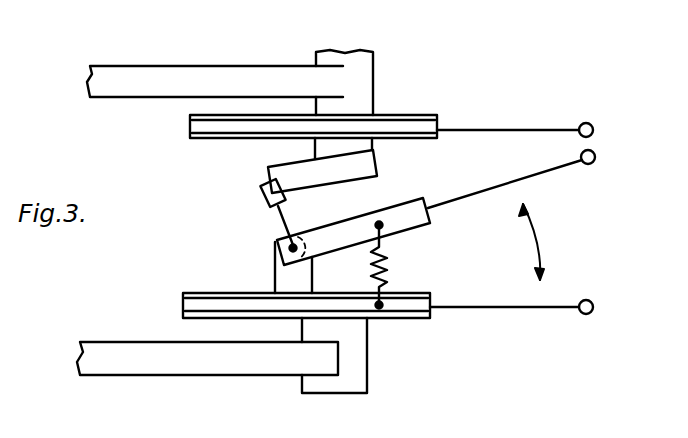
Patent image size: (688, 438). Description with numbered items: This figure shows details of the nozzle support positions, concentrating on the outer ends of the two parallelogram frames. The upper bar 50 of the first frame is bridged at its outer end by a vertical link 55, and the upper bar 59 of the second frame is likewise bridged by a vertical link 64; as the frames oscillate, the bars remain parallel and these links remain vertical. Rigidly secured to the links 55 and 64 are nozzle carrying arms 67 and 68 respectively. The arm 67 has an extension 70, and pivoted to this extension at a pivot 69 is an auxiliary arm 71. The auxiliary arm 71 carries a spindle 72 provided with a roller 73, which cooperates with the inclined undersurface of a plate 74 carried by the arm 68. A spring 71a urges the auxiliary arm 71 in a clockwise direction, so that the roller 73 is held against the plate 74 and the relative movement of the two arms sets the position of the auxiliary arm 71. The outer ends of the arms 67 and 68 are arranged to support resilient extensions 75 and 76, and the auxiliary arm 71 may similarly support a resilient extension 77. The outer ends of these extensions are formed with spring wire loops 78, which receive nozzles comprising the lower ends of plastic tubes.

The upper bar 50 is at (197, 358).
The vertical link 55 is at (365, 350).
The upper bar 59 is at (185, 72).
The vertical link 64 is at (365, 63).
The nozzle carrying arm 67 is at (407, 312).
The nozzle carrying arm 68 is at (421, 118).
The pivot 69 is at (297, 238).
The extension 70 is at (280, 270).
The auxiliary arm 71 is at (406, 210).
The spring 71a is at (385, 275).
The spindle 72 is at (279, 213).
The roller 73 is at (262, 193).
The plate 74 is at (287, 165).
The resilient extension 75 is at (513, 310).
The resilient extension 76 is at (502, 130).
The resilient extension 77 is at (493, 190).
The spring wire loops 78 is at (595, 130).